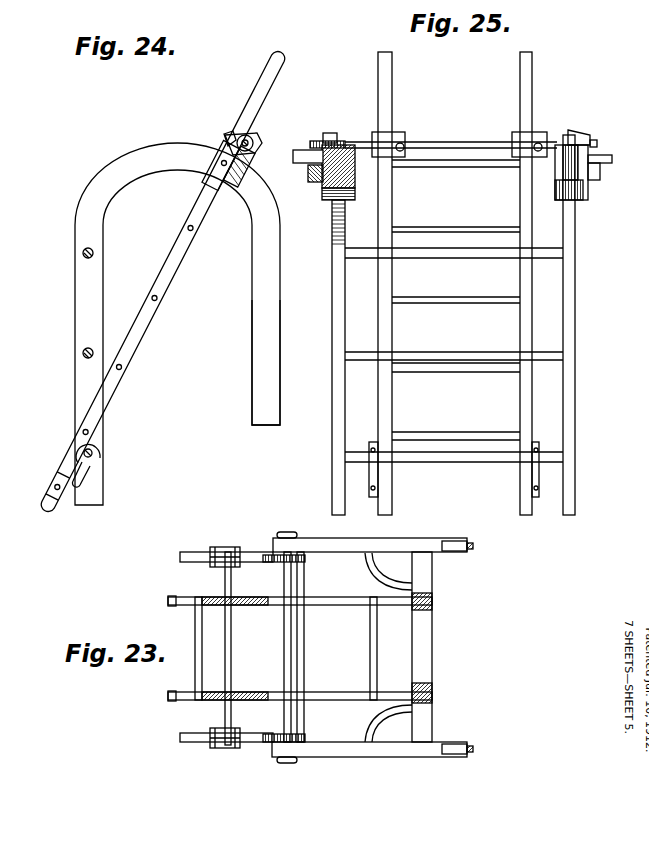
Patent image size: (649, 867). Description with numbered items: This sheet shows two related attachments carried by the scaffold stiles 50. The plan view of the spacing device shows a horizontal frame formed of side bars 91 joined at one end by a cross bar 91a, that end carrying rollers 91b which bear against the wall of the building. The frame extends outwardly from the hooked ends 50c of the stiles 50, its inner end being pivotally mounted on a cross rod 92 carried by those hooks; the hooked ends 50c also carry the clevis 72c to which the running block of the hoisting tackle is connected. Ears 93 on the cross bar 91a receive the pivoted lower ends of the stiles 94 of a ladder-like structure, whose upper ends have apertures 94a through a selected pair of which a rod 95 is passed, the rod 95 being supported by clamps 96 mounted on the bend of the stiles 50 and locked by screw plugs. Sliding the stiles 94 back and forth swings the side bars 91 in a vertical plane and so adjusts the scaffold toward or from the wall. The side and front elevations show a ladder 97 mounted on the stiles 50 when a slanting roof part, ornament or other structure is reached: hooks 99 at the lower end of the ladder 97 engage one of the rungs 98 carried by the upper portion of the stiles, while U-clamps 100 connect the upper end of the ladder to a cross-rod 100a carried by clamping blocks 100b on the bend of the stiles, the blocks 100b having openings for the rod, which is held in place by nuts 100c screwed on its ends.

In FIG. 24, the stile 50 is at (85, 301).
In FIG. 25, the stile 50 is at (568, 433).
In FIG. 23, the stile 50 is at (182, 555).
In FIG. 24, the hooked end of the stile 50c is at (258, 301).
In FIG. 25, the hooked end of the stile 50c is at (338, 302).
In FIG. 23, the hooked end of the stile 50c is at (277, 648).
In FIG. 23, the clevis 72c is at (290, 532).
In FIG. 23, the side bar 91 is at (345, 545).
In FIG. 23, the cross bar 91a is at (433, 652).
In FIG. 23, the roller 91b is at (473, 546).
In FIG. 23, the cross rod 92 is at (285, 655).
In FIG. 23, the ear 93 is at (432, 597).
In FIG. 23, the stile of ladder-like structure 94 is at (318, 695).
In FIG. 23, the aperture 94a is at (230, 597).
In FIG. 23, the rod 95 is at (226, 647).
In FIG. 23, the clamp 96 is at (232, 548).
In FIG. 24, the ladder 97 is at (137, 337).
In FIG. 25, the ladder 97 is at (385, 335).
In FIG. 24, the rung 98 is at (73, 443).
In FIG. 25, the rung 98 is at (440, 460).
In FIG. 24, the hook 99 is at (100, 460).
In FIG. 25, the hook 99 is at (378, 472).
In FIG. 24, the U-clamp 100 is at (234, 134).
In FIG. 25, the U-clamp 100 is at (392, 133).
In FIG. 24, the cross-rod 100a is at (252, 145).
In FIG. 25, the cross-rod 100a is at (455, 143).
In FIG. 24, the clamping block 100b is at (323, 183).
In FIG. 25, the clamping block 100b is at (580, 203).
In FIG. 25, the nut 100c is at (590, 133).